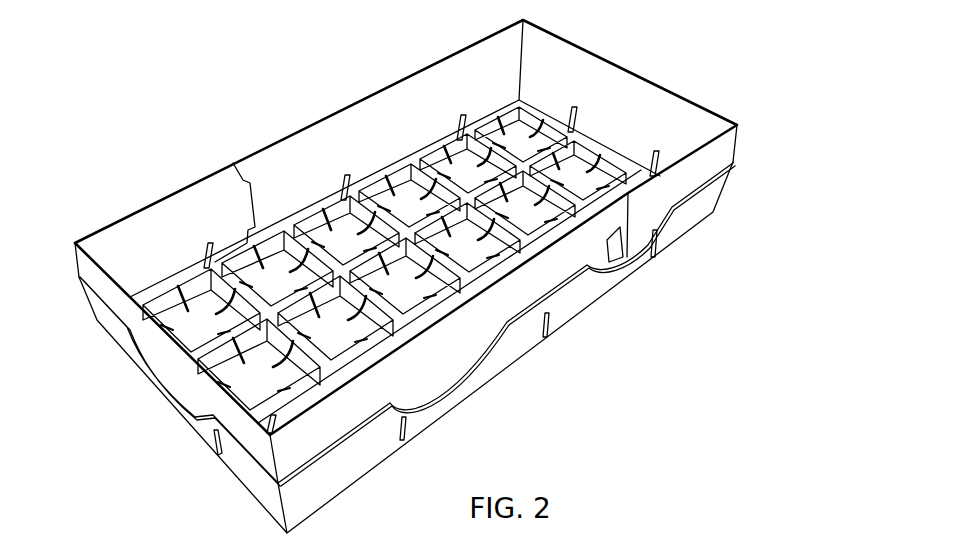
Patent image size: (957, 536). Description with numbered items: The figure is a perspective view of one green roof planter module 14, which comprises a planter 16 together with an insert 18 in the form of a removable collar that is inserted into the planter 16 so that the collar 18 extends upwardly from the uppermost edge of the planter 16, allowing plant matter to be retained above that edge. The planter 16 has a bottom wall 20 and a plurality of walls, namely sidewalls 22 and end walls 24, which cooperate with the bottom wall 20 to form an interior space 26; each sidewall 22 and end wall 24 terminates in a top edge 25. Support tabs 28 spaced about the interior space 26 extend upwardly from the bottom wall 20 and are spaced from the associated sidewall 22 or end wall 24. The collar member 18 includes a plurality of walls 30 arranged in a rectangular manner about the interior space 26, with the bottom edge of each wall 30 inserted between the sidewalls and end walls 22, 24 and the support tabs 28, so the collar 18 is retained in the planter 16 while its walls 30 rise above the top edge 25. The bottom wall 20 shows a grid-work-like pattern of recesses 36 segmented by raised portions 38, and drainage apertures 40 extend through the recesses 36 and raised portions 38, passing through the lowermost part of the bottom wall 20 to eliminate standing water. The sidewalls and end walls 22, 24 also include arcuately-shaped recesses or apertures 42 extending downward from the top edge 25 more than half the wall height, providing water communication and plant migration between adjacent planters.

The green roof planter module 14 is at (396, 242).
The planter 16 is at (407, 347).
The insert (collar member) 18 is at (133, 211).
The bottom wall 20 is at (384, 233).
The sidewall 22 is at (511, 341).
The end wall 24 is at (246, 473).
The top edge 25 is at (360, 430).
The interior space 26 is at (551, 77).
The support tab 28 is at (217, 246).
The wall 30 is at (506, 338).
The recess 36 is at (336, 235).
The raised portion 38 is at (367, 197).
The drainage aperture 40 is at (392, 176).
The arcuately-shaped recess or aperture 42 is at (482, 364).